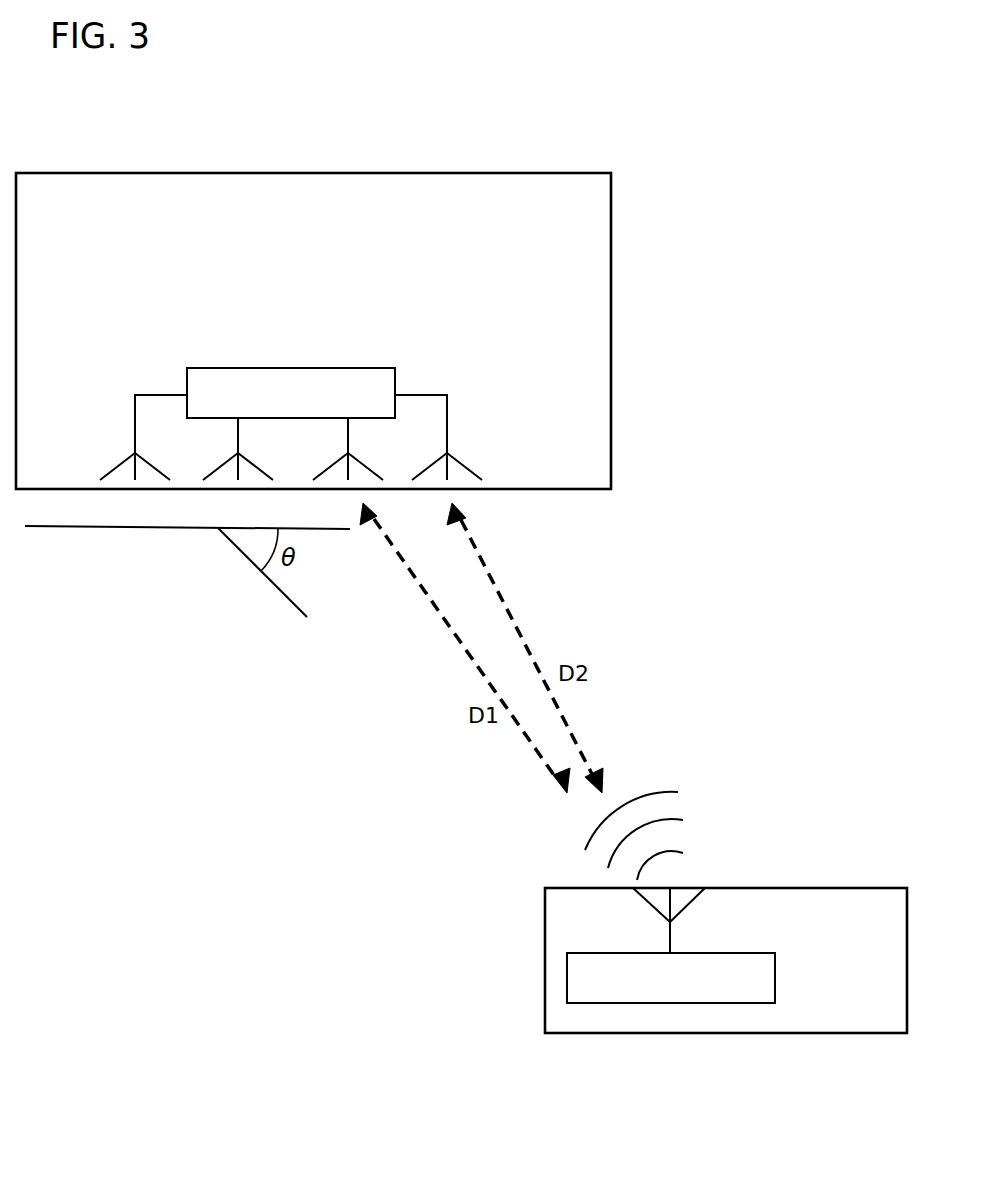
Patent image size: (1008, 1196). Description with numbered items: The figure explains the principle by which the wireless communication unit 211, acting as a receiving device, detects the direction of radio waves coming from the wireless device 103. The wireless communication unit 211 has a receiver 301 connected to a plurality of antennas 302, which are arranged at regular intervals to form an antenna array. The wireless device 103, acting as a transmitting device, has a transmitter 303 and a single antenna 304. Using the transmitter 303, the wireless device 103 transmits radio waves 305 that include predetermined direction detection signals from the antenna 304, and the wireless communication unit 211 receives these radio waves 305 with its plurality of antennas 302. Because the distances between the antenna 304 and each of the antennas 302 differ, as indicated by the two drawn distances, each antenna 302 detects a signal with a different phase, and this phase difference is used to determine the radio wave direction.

The wireless communication unit 211 is at (483, 173).
The receiver 301 is at (359, 350).
The antennas 302 is at (447, 410).
The wireless device 103 is at (832, 888).
The transmitter 303 is at (565, 982).
The antenna 304 is at (650, 908).
The radio waves 305 is at (650, 788).